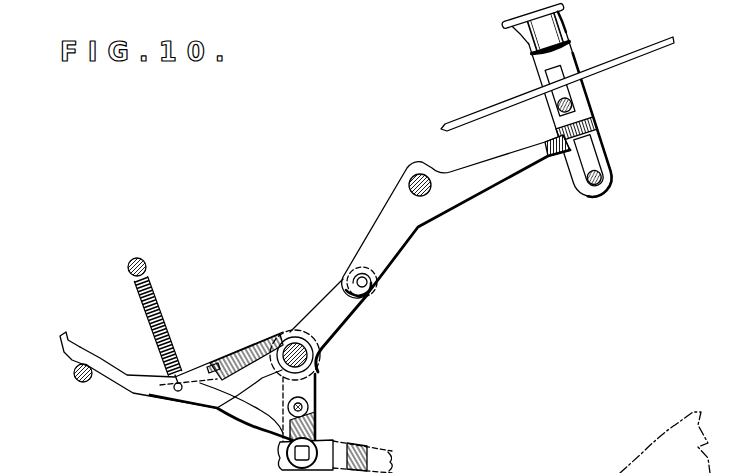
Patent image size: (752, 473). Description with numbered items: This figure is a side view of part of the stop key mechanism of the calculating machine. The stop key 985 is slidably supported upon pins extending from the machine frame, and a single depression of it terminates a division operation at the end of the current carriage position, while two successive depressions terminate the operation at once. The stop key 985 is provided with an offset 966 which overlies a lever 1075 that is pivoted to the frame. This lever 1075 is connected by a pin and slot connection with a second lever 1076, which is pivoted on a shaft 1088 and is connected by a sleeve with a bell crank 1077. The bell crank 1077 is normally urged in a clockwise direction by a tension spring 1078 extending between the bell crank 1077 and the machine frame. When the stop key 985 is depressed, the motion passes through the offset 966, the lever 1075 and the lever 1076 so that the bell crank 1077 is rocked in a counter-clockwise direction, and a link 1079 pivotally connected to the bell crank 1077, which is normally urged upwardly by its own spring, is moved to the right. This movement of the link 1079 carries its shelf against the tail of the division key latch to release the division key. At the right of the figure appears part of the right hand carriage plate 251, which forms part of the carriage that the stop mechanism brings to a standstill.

The stop key 985 is at (563, 30).
The offset 966 is at (580, 121).
The lever 1075 is at (475, 166).
The lever 1076 is at (344, 275).
The bell crank 1077 is at (160, 402).
The tension spring 1078 is at (146, 275).
The link 1079 is at (396, 461).
The shaft 1088 is at (313, 356).
The right hand carriage plate 251 is at (665, 442).